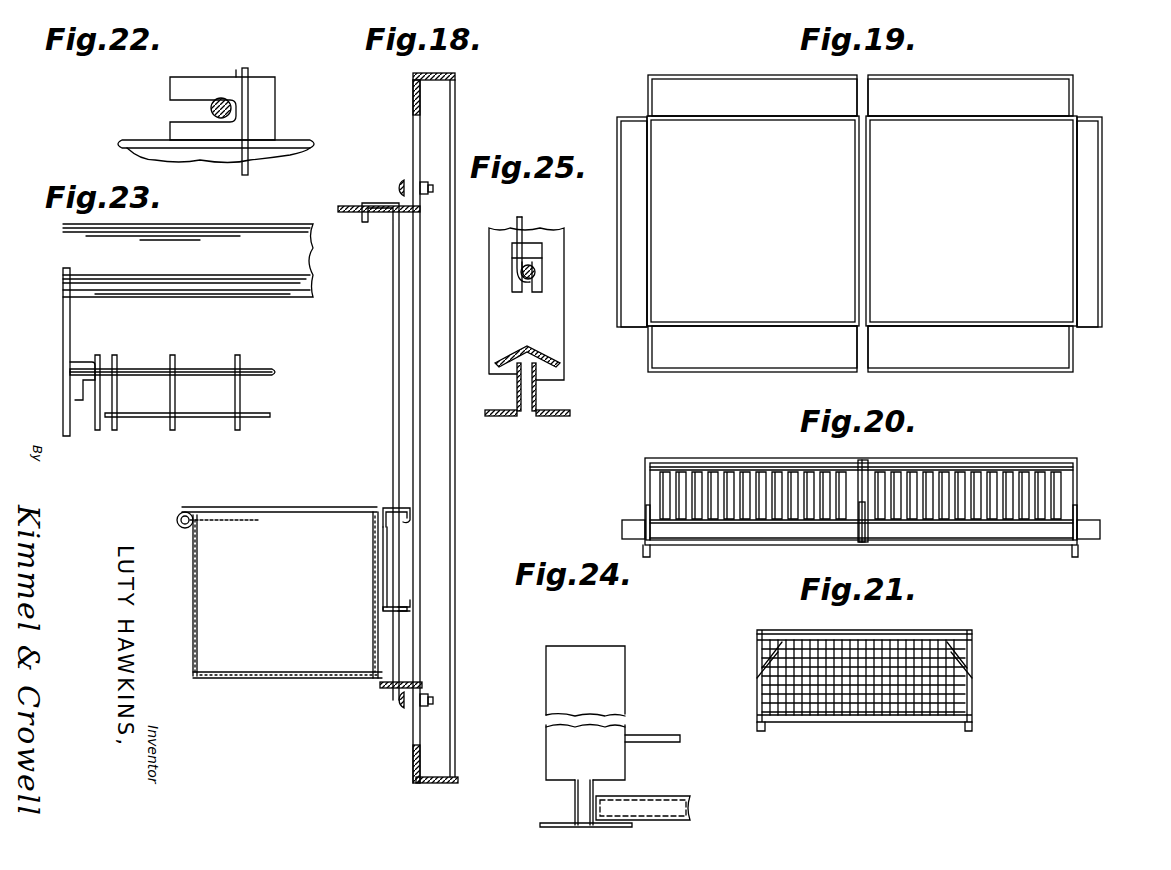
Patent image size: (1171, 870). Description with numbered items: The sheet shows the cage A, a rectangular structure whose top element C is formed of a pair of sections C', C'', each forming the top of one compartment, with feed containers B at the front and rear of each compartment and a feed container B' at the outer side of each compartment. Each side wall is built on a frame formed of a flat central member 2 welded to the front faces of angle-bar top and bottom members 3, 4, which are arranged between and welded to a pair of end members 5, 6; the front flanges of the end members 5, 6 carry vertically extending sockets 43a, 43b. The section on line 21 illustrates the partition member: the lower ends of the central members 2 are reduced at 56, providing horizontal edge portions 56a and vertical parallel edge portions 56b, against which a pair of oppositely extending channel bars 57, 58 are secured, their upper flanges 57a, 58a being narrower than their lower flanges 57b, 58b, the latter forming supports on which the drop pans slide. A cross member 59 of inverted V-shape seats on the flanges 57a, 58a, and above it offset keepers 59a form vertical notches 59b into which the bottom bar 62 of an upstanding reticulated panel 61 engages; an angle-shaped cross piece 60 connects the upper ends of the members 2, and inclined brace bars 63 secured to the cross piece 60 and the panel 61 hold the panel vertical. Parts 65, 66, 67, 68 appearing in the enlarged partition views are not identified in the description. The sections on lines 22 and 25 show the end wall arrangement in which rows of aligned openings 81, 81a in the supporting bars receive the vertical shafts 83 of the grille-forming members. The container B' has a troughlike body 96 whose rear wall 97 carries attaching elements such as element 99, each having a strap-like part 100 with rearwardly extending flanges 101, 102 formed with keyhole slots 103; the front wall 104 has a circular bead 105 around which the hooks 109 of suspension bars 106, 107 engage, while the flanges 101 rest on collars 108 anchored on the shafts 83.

In FIG. 23, the central member 2 is at (62, 294).
In FIG. 25, the central member 2 is at (568, 306).
In FIG. 20, the central member 2 is at (830, 462).
In FIG. 21, the central member 2 is at (756, 706).
In FIG. 24, the central member 2 is at (600, 686).
In FIG. 20, the top member 3 is at (730, 462).
In FIG. 20, the bottom member 4 is at (722, 546).
In FIG. 20, the end member 5 is at (645, 476).
In FIG. 20, the end member 6 is at (1078, 480).
In FIG. 20, the section line 21— 21 is at (870, 450).
In FIG. 18, the section line 22— 22 is at (365, 478).
In FIG. 23, the section line 25— 25 is at (198, 212).
In FIG. 20, the vertically extending socket 43a is at (645, 505).
In FIG. 20, the vertically extending socket 43b is at (1080, 500).
In FIG. 24, the reduced lower end terminal portion 56 is at (588, 805).
In FIG. 25, the horizontal edge portions 56a is at (563, 378).
In FIG. 24, the horizontal edge portions 56a is at (620, 776).
In FIG. 24, the vertical edge portions 56b is at (572, 814).
In FIG. 25, the channel bar 57 is at (516, 394).
In FIG. 24, the channel bar 57 is at (576, 788).
In FIG. 25, the upper flange 57a is at (505, 362).
In FIG. 25, the lower flange 57b is at (495, 417).
In FIG. 25, the channel bar 58 is at (538, 408).
In FIG. 24, the channel bar 58 is at (595, 796).
In FIG. 25, the upper flange 58a is at (552, 358).
In FIG. 25, the lower flange 58b is at (560, 418).
In FIG. 25, the cross member 59 is at (538, 352).
In FIG. 21, the cross member 59 is at (975, 685).
In FIG. 25, the offset keepers 59a is at (542, 262).
In FIG. 25, the vertical notches 59b is at (544, 282).
In FIG. 23, the angle-shaped cross piece 60 is at (105, 250).
In FIG. 21, the angle-shaped cross piece 60 is at (832, 622).
In FIG. 25, the reticulated panel 61 is at (524, 220).
In FIG. 21, the reticulated panel 61 is at (888, 650).
In FIG. 25, the bar 62 is at (520, 278).
In FIG. 21, the bar 62 is at (912, 718).
In FIG. 21, the inclined brace bars 63 is at (767, 653).
In FIG. 23, the corner brace / bracket 65 is at (95, 380).
In FIG. 21, the corner brace / bracket 65 is at (985, 636).
In FIG. 23, the support rod 66 is at (240, 398).
In FIG. 23, the rod 67 is at (258, 367).
In FIG. 21, the rail 68 is at (975, 707).
In FIG. 18, the openings 81 is at (430, 200).
In FIG. 18, the openings 81a is at (410, 684).
In FIG. 22, the vertical shaft 83 is at (216, 97).
In FIG. 22, the troughlike body 96 is at (268, 160).
In FIG. 18, the troughlike body 96 is at (192, 598).
In FIG. 22, the rear wall 97 is at (302, 141).
In FIG. 18, the rear wall 97 is at (376, 596).
In FIG. 18, the attaching element 99 is at (388, 562).
In FIG. 18, the strap-like part 100 is at (388, 580).
In FIG. 22, the flange 101 is at (230, 76).
In FIG. 18, the flange 102 is at (408, 608).
In FIG. 22, the key hole shaped slot 103 is at (170, 112).
In FIG. 18, the front wall 104 is at (190, 551).
In FIG. 18, the circular bead 105 is at (196, 529).
In FIG. 22, the suspension bar 106 is at (248, 110).
In FIG. 18, the suspension bar 107 is at (306, 508).
In FIG. 18, the collar 108 is at (412, 524).
In FIG. 18, the circular hook 109 is at (176, 523).
In FIG. 19, the cage A is at (642, 332).
In FIG. 19, the feed container B is at (860, 226).
In FIG. 20, the feed container B is at (861, 550).
In FIG. 22, the feed container B' is at (319, 162).
In FIG. 18, the feed container B' is at (289, 696).
In FIG. 19, the feed container B' is at (852, 222).
In FIG. 20, the feed container B' is at (860, 537).
In FIG. 19, the top element C is at (907, 358).
In FIG. 19, the top section C' is at (753, 221).
In FIG. 19, the top section C'' is at (971, 221).